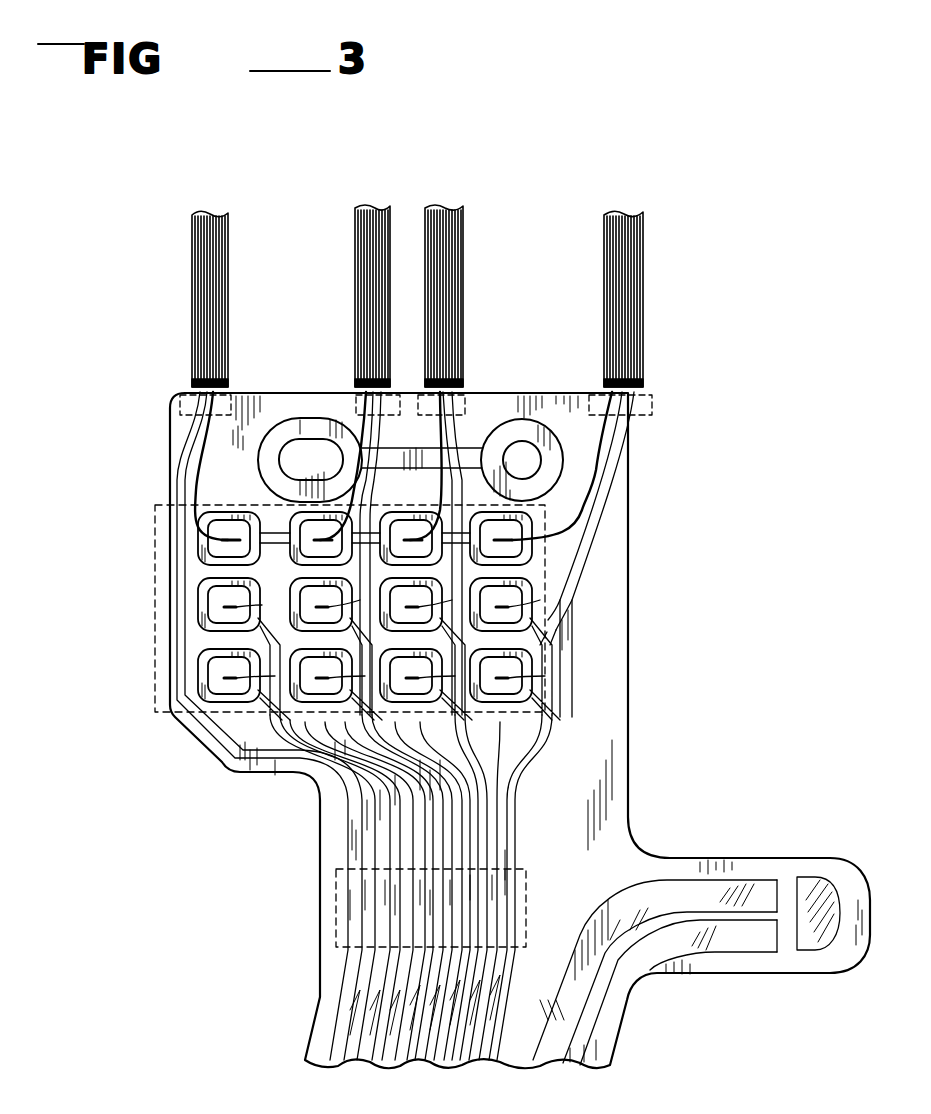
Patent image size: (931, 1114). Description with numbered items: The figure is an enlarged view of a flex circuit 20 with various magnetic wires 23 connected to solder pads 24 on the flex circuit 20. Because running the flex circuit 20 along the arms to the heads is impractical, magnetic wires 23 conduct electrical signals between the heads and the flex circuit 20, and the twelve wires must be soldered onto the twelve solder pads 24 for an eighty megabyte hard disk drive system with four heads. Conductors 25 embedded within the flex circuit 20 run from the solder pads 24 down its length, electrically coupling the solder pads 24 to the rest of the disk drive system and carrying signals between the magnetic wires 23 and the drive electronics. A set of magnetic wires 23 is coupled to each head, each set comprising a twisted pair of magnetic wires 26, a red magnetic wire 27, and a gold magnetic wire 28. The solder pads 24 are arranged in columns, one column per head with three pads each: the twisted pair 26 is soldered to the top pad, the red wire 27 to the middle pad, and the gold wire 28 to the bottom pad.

The flex circuit 20 is at (599, 861).
The magnetic wires 23 is at (355, 400).
The solder pads 24 is at (155, 590).
The conductors 25 is at (336, 908).
The twisted pair of magnetic wires 26 is at (582, 497).
The red magnetic wire 27 is at (567, 577).
The gold magnetic wire 28 is at (547, 632).